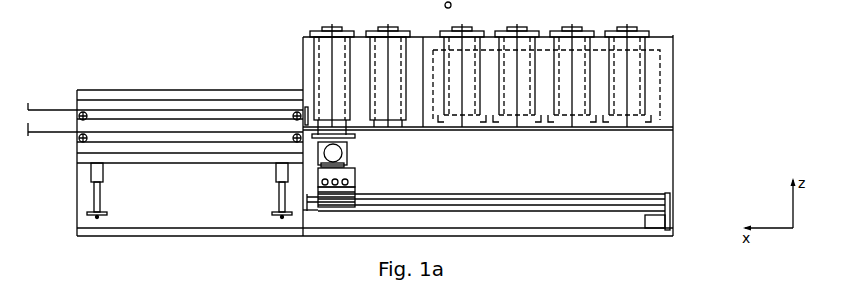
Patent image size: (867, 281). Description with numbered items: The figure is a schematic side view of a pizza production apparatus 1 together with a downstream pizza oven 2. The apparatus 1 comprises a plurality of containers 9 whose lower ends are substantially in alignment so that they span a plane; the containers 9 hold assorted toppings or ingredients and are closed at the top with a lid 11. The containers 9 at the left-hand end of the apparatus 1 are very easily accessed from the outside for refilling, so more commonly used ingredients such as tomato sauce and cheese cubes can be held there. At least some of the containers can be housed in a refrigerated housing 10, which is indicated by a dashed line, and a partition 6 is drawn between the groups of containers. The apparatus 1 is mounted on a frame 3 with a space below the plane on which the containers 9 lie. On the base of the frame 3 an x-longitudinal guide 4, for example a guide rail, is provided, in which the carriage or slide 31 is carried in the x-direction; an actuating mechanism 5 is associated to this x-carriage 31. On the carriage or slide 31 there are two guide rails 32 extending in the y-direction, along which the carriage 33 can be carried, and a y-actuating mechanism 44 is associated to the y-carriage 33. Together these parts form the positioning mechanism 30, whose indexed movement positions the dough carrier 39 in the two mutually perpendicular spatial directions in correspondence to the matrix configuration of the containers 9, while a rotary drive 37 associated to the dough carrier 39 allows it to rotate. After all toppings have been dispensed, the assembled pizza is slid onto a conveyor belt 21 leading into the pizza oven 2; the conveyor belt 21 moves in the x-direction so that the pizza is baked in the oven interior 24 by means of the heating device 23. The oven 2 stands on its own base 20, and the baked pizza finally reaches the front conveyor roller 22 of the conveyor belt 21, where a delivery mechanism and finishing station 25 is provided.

The production apparatus 1 is at (714, 53).
The pizza oven 2 is at (145, 40).
The frame 3 is at (585, 235).
The x-longitudinal guide 4 is at (585, 197).
The actuating mechanism 5 is at (658, 222).
The partition wall 6 is at (423, 38).
The container 9 is at (322, 45).
The housing 10 is at (437, 50).
The lid 11 is at (332, 28).
The base frame 20 is at (202, 218).
The conveyor belt 21 is at (147, 132).
The front conveyor roller 22 is at (77, 142).
The heating device 23 is at (233, 117).
The oven interior 24 is at (187, 91).
The delivery mechanism and finishing station 25 is at (38, 134).
The positioning mechanism 30 is at (329, 219).
The carriage or slide 31 is at (352, 197).
The guide rails 32 is at (357, 185).
The carriage 33 is at (337, 178).
The rotary drive 37 is at (340, 152).
The dough carrier 39 is at (355, 136).
The y-actuating mechanism 44 is at (355, 182).